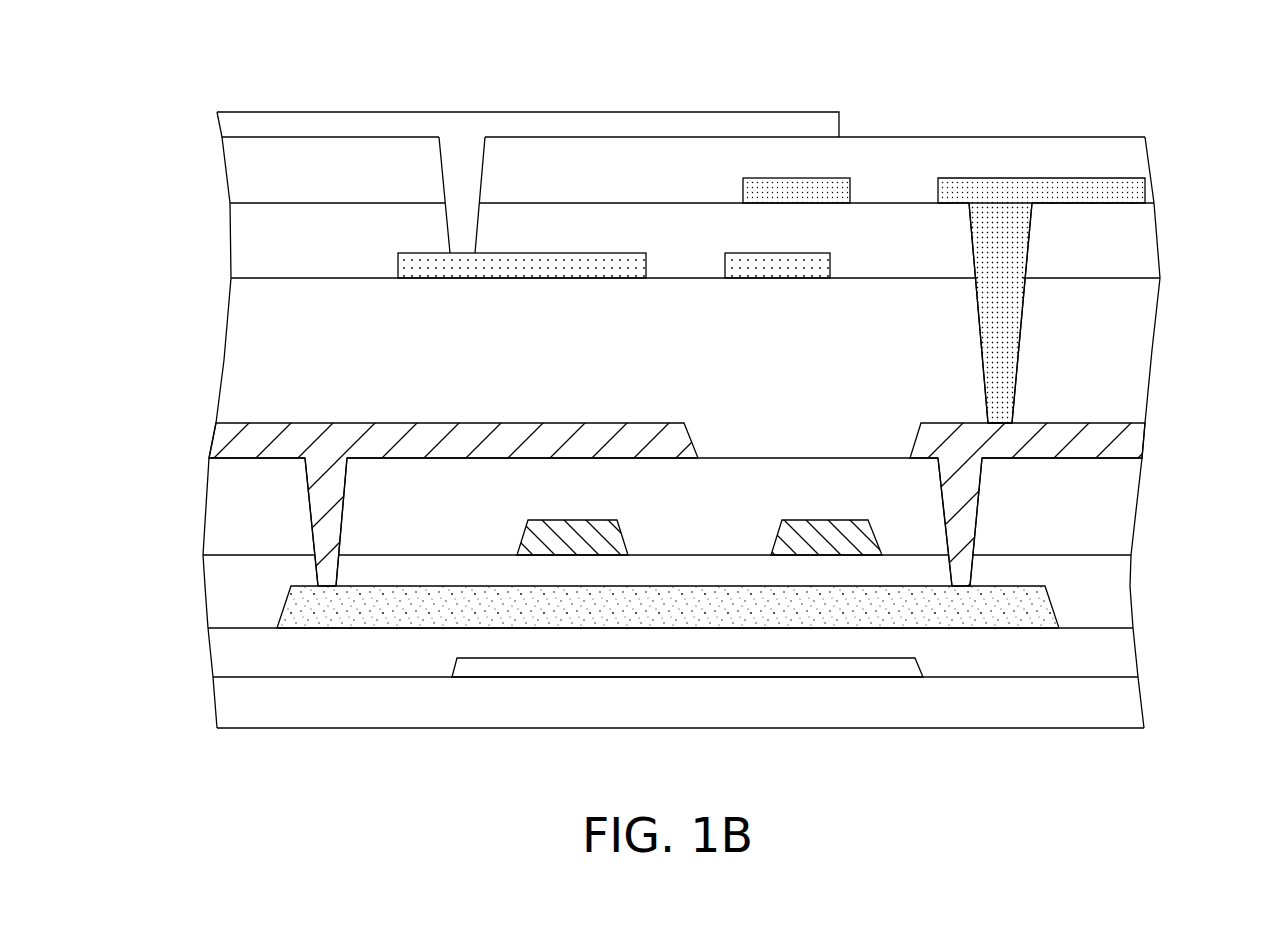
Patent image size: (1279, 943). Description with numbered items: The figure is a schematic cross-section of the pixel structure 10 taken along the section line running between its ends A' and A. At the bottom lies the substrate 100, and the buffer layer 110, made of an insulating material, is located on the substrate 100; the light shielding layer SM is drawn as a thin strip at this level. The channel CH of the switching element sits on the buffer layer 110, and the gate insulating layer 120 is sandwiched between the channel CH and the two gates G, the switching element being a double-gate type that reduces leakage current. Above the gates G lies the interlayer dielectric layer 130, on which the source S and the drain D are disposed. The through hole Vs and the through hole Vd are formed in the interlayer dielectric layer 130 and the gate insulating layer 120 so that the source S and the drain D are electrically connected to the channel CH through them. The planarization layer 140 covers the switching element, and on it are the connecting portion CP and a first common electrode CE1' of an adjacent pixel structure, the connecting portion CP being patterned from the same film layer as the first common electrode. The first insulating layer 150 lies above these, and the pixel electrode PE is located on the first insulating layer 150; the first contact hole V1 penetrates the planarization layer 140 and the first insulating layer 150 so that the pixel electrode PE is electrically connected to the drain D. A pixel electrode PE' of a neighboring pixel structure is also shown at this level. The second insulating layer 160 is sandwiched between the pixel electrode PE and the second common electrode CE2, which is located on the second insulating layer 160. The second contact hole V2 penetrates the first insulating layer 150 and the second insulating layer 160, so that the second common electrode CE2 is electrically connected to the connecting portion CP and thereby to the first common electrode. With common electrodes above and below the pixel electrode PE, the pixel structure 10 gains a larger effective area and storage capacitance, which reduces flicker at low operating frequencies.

The pixel structure 10 is at (1248, 741).
The substrate 100 is at (243, 720).
The buffer layer 110 is at (243, 660).
The gate insulating layer 120 is at (243, 598).
The interlayer dielectric layer 130 is at (250, 532).
The planarization layer 140 is at (243, 358).
The first insulating layer 150 is at (243, 227).
The second insulating layer 160 is at (253, 165).
The light shielding layer SM is at (902, 670).
The channel CH is at (1027, 613).
The gate G is at (587, 543).
The source S is at (257, 445).
The drain D is at (1088, 450).
The through hole Vs is at (343, 497).
The through hole Vd is at (945, 511).
The connecting portion CP is at (400, 263).
The first common electrode CE1' is at (777, 159).
The pixel electrode PE' is at (816, 128).
The pixel electrode PE is at (1099, 298).
The first contact hole V1 is at (1025, 250).
The second contact hole V2 is at (480, 167).
The second common electrode CE2 is at (672, 127).
The section line end A is at (1153, 109).
The section line end A' is at (207, 89).